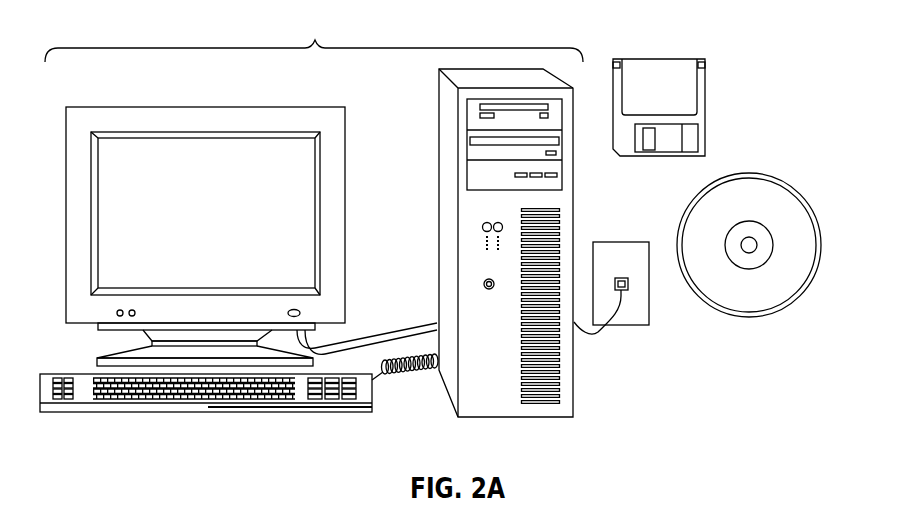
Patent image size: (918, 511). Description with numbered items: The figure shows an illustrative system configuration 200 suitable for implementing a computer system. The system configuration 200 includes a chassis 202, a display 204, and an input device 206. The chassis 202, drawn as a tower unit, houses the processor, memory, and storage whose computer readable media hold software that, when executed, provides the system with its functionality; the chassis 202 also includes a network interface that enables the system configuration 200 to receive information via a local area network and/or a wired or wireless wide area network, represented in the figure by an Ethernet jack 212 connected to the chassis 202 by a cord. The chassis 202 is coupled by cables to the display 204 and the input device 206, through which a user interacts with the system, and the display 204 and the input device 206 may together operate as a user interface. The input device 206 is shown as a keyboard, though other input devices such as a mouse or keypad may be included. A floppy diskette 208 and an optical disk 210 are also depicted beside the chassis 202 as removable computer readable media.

The system configuration 200 is at (314, 38).
The chassis 202 is at (439, 278).
The display 204 is at (85, 323).
The input device 206 is at (80, 412).
The floppy disk 208 is at (706, 134).
The optical disk 210 is at (760, 175).
The Ethernet jack 212 is at (614, 242).